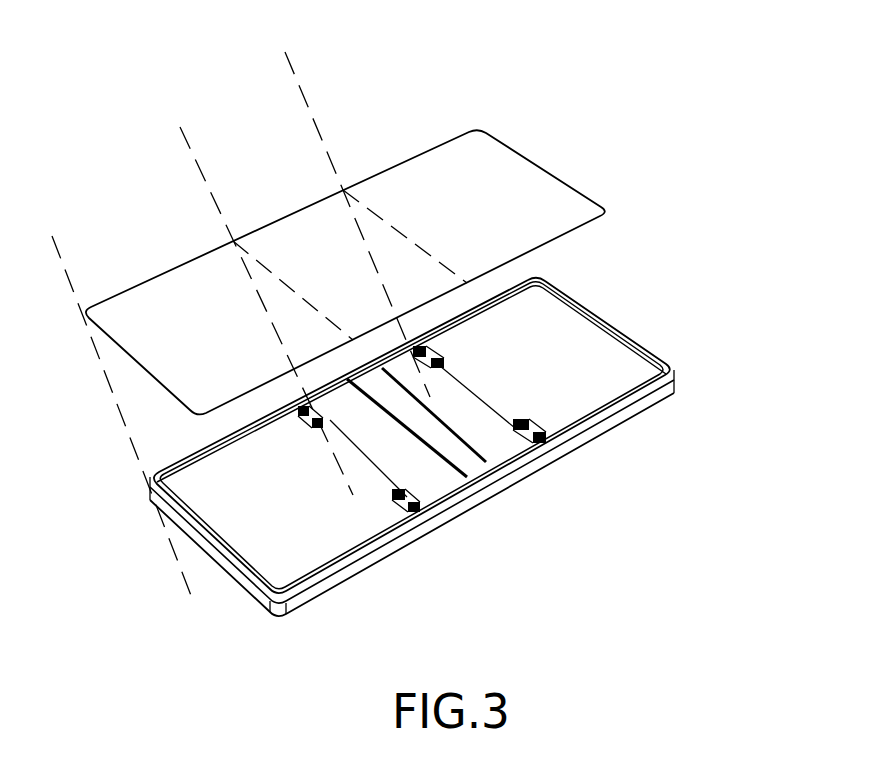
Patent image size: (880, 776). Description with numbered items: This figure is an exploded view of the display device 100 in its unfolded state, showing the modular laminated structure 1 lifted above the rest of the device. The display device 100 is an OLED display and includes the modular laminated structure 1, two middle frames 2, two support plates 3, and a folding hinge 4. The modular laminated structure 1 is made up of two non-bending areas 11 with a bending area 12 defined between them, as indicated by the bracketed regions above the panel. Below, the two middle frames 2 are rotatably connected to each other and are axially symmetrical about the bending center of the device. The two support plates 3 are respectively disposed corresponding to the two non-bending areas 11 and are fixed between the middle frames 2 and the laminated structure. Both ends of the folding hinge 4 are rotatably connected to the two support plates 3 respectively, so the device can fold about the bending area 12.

The display device 100 is at (648, 168).
The modular laminated structure 1 is at (312, 207).
The non-bending area 11 is at (264, 325).
The bending area 12 is at (323, 310).
The middle frame 2 is at (600, 425).
The support plate 3 is at (627, 368).
The folding hinge 4 is at (477, 460).